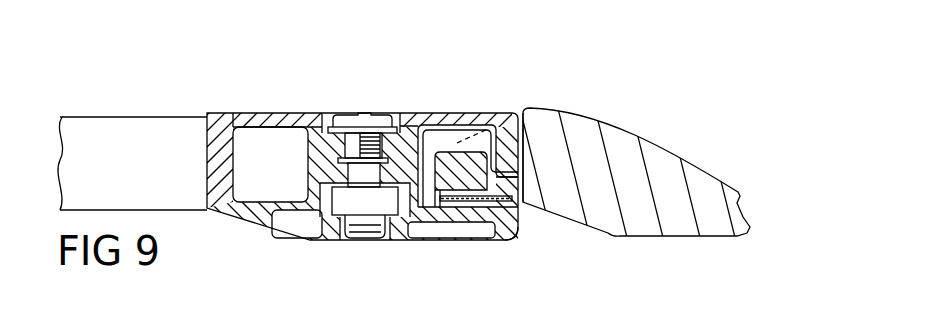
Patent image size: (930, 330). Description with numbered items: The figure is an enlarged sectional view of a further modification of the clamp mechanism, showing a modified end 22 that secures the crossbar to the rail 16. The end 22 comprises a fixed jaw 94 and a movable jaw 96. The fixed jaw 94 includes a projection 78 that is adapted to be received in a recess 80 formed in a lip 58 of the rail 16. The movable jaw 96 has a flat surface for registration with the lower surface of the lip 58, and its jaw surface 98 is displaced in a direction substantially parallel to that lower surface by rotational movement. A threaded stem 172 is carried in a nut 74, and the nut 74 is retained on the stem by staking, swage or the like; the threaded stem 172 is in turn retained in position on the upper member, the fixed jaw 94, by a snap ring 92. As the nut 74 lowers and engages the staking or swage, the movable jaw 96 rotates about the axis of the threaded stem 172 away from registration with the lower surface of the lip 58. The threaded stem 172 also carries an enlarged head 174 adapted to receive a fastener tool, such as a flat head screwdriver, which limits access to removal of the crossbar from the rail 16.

The rail 16 is at (693, 177).
The end 22 is at (396, 93).
The lip 58 is at (523, 203).
The nut 74 is at (343, 204).
The projection 78 is at (495, 176).
The recess 80 is at (516, 160).
The snap ring 92 is at (350, 112).
The fixed jaw 94 is at (458, 118).
The movable jaw 96 is at (395, 232).
The jaw surface 98 is at (478, 212).
The threaded stem 172 is at (305, 112).
The enlarged head 174 is at (370, 112).